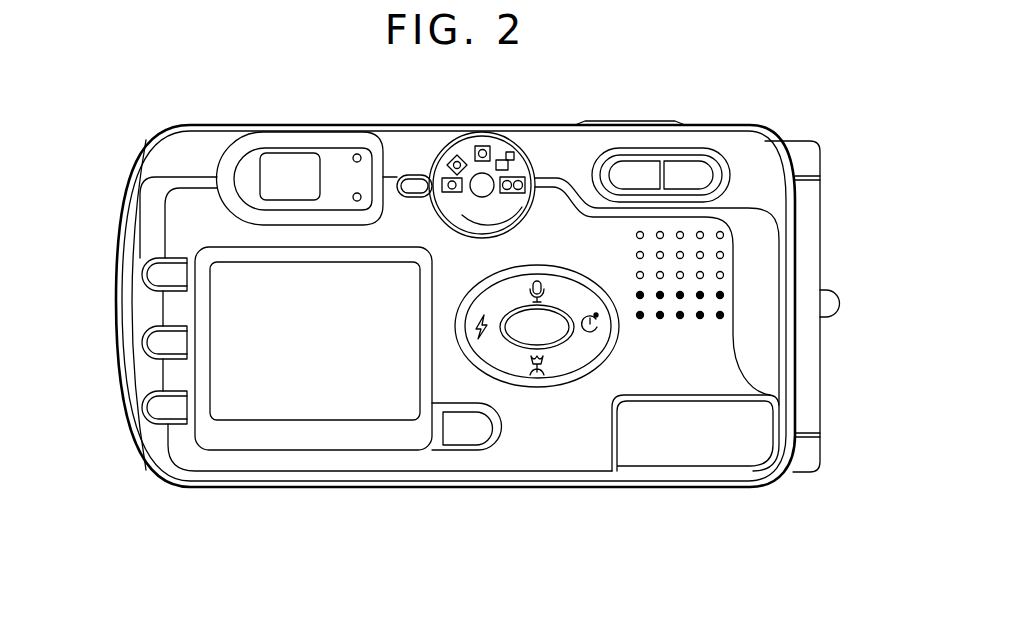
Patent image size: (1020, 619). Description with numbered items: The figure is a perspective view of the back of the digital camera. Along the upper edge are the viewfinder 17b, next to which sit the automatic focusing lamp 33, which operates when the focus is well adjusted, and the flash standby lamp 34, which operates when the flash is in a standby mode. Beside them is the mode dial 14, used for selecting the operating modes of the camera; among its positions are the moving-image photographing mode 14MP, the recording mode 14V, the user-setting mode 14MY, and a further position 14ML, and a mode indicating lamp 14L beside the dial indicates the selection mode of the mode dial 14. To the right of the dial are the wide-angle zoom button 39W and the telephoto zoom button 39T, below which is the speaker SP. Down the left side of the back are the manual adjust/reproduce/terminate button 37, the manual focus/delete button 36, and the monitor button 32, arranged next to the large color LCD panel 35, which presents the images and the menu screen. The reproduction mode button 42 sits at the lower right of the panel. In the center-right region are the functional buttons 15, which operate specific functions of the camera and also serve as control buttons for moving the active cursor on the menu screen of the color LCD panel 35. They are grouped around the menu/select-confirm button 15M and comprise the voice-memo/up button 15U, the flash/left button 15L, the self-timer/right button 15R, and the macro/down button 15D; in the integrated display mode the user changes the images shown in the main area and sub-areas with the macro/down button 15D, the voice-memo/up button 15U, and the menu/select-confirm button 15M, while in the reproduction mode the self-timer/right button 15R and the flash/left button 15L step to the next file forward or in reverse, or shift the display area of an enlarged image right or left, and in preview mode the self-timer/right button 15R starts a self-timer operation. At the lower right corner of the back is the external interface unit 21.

The viewfinder 17b is at (290, 160).
The automatic focusing lamp 33 is at (355, 155).
The flash standby lamp 34 is at (360, 195).
The mode dial 14 is at (494, 157).
The mode indicating lamp 14L is at (417, 184).
The moving-image photographing mode 14MP is at (510, 158).
The recording mode 14V is at (527, 178).
The manual mode position 14ML is at (443, 193).
The user-setting mode 14MY is at (520, 206).
The wide-angle zoom button 39W is at (630, 172).
The telephoto zoom button 39T is at (693, 172).
The speaker SP is at (722, 296).
The manual adjust/reproduce/terminate button 37 is at (151, 272).
The manual focus/delete button 36 is at (151, 340).
The monitor button 32 is at (151, 406).
The color LCD panel 35 is at (309, 400).
The reproduction mode button 42 is at (460, 434).
The functional buttons 15 is at (564, 394).
The voice-memo/up button 15U is at (527, 286).
The flash/left button 15L is at (478, 340).
The self-timer/right button 15R is at (600, 322).
The macro/down button 15D is at (543, 364).
The menu/select-confirm button 15M is at (557, 333).
The external interface unit 21 is at (734, 446).